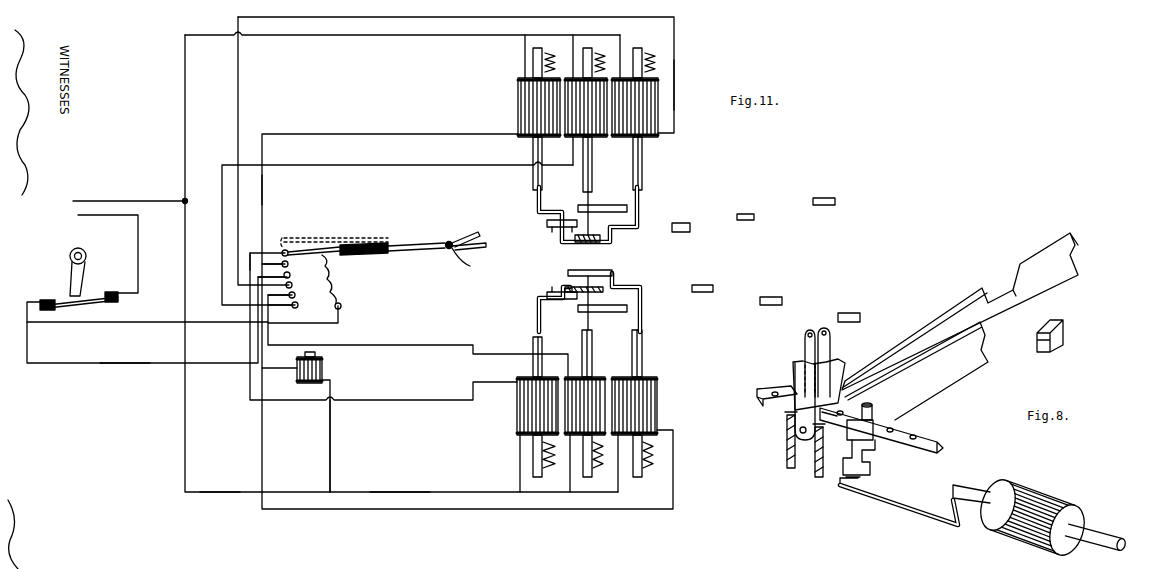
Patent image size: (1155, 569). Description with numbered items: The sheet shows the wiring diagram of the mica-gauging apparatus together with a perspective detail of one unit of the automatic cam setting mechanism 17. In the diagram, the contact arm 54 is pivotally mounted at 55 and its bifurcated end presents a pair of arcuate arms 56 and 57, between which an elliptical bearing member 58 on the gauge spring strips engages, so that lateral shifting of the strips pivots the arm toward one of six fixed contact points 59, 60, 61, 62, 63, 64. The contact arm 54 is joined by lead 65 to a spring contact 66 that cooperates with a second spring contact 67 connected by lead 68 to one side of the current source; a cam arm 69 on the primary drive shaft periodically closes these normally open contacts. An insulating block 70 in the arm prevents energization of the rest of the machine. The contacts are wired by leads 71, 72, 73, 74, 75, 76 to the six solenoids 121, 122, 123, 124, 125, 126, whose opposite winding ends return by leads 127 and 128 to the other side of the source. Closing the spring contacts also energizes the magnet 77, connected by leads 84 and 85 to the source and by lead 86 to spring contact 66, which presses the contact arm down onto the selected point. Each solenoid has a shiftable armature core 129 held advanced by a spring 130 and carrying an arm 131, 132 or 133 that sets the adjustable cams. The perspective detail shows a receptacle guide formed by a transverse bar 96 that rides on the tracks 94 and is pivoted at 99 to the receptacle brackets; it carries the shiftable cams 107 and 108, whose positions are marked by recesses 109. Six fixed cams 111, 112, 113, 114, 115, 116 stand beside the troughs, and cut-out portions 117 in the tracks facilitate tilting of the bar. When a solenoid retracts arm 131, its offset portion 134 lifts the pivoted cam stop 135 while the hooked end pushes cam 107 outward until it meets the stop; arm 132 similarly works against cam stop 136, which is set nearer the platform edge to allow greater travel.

In FIG. 11, the automatic cam setting mechanism 17 is at (689, 83).
In FIG. 11, the contact arm 54 is at (413, 250).
In FIG. 11, the pivotal mounting 55 is at (449, 250).
In FIG. 11, the arcuate arm 56 is at (474, 234).
In FIG. 11, the arcuate arm 57 is at (471, 266).
In FIG. 11, the elliptical bearing member 58 is at (486, 243).
In FIG. 11, the fixed contact point 59 is at (283, 251).
In FIG. 11, the fixed contact point 60 is at (289, 264).
In FIG. 11, the fixed contact point 61 is at (291, 275).
In FIG. 11, the fixed contact point 62 is at (293, 285).
In FIG. 11, the fixed contact point 63 is at (296, 296).
In FIG. 11, the fixed contact point 64 is at (299, 305).
In FIG. 11, the lead 65 is at (338, 318).
In FIG. 11, the spring contact 66 is at (39, 294).
In FIG. 11, the spring contact 67 is at (97, 295).
In FIG. 11, the lead 68 is at (138, 257).
In FIG. 11, the cam arm 69 is at (62, 271).
In FIG. 11, the insulating block 70 is at (366, 244).
In FIG. 11, the lead 71 is at (250, 253).
In FIG. 11, the lead 72 is at (262, 190).
In FIG. 11, the lead 73 is at (271, 268).
In FIG. 11, the lead 74 is at (271, 280).
In FIG. 11, the lead 75 is at (278, 298).
In FIG. 11, the lead 76 is at (279, 312).
In FIG. 11, the magnet 77 is at (322, 368).
In FIG. 11, the lead 84 is at (331, 460).
In FIG. 11, the lead 85 is at (224, 492).
In FIG. 11, the lead 86 is at (127, 363).
In FIG. 8, the track 94 is at (915, 362).
In FIG. 8, the transverse bar 96 is at (930, 440).
In FIG. 8, the pivotal connection 99 is at (795, 434).
In FIG. 11, the shiftable cam 107 is at (589, 266).
In FIG. 8, the shiftable cam 107 is at (873, 441).
In FIG. 11, the shiftable cam 108 is at (583, 247).
In FIG. 8, the recess 109 is at (775, 397).
In FIG. 11, the fixed cam 111 is at (702, 292).
In FIG. 8, the fixed cam 111 is at (1055, 350).
In FIG. 11, the fixed cam 112 is at (692, 222).
In FIG. 8, the fixed cam 113 is at (772, 305).
In FIG. 8, the fixed cam 114 is at (753, 213).
In FIG. 8, the fixed cam 115 is at (850, 313).
In FIG. 8, the fixed cam 116 is at (830, 198).
In FIG. 8, the cut-out portion 117 is at (997, 288).
In FIG. 11, the solenoid 121 is at (517, 415).
In FIG. 8, the solenoid 121 is at (1032, 540).
In FIG. 11, the solenoid 122 is at (518, 106).
In FIG. 11, the solenoid 123 is at (657, 403).
In FIG. 11, the solenoid 124 is at (652, 138).
In FIG. 11, the solenoid 125 is at (600, 380).
In FIG. 11, the solenoid 126 is at (575, 137).
In FIG. 11, the lead 127 is at (396, 492).
In FIG. 11, the lead 128 is at (395, 36).
In FIG. 11, the armature core 129 is at (533, 181).
In FIG. 8, the armature core 129 is at (1095, 531).
In FIG. 11, the spring 130 is at (555, 55).
In FIG. 11, the arm 131 is at (537, 204).
In FIG. 8, the arm 131 is at (935, 521).
In FIG. 11, the arm 132 is at (642, 204).
In FIG. 11, the arm 133 is at (591, 296).
In FIG. 8, the offset portion 134 is at (858, 497).
In FIG. 11, the cam stop 135 is at (556, 228).
In FIG. 8, the cam stop 135 is at (872, 468).
In FIG. 11, the cam stop 136 is at (604, 206).